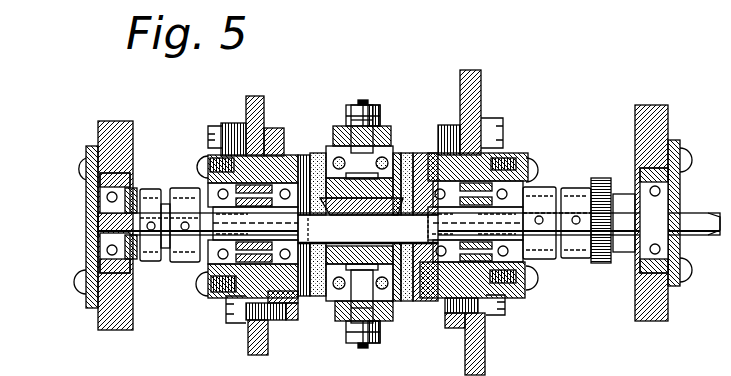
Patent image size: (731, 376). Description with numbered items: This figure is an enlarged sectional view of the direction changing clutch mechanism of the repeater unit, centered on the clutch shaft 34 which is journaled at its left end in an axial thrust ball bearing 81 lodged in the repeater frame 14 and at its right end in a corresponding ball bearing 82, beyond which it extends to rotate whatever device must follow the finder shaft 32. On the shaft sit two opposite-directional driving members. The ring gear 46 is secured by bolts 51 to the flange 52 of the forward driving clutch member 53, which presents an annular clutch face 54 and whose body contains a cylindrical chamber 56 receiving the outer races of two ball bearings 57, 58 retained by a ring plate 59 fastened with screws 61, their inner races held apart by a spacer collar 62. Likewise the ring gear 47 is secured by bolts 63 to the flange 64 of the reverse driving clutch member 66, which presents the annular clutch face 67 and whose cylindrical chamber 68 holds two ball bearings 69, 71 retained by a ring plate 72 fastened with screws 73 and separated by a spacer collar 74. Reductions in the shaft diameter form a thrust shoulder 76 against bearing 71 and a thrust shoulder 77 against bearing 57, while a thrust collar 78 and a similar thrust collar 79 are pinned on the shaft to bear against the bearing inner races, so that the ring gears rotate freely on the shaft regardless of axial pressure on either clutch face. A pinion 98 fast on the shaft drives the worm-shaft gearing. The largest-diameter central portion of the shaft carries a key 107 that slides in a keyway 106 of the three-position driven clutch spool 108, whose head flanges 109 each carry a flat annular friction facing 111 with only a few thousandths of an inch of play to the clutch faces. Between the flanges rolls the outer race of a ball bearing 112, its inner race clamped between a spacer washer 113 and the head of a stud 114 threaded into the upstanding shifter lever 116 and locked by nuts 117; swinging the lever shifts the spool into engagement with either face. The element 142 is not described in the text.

The repeater frame 14 is at (90, 314).
The finder shaft 32 is at (722, 323).
The clutch shaft 34 is at (92, 216).
The ring gear 46 is at (470, 80).
The ring gear 47 is at (250, 101).
The bolts 51 is at (488, 114).
The flange 52 is at (436, 120).
The forward driving clutch member 53 is at (496, 148).
The annular clutch face 54 is at (410, 157).
The cylindrical chamber 56 is at (496, 294).
The ball bearing 57 is at (436, 230).
The ball bearing 58 is at (524, 168).
The ring plate 59 is at (505, 152).
The screws 61 is at (514, 158).
The spacer collar 62 is at (476, 228).
The bolts 63 is at (208, 122).
The flange 64 is at (264, 122).
The reverse driving clutch member 66 is at (220, 141).
The annular clutch face 67 is at (296, 148).
The cylindrical chamber 68 is at (214, 296).
The ball bearing 69 is at (200, 270).
The ball bearing 71 is at (300, 270).
The ring plate 72 is at (228, 158).
The screws 73 is at (196, 160).
The spacer collar 74 is at (255, 223).
The thrust shoulder 76 is at (294, 216).
The thrust shoulder 77 is at (424, 203).
The thrust collar 78 is at (534, 252).
The thrust collar 79 is at (176, 256).
The ball bearing 81 is at (100, 194).
The ball bearing 82 is at (660, 198).
The pinion 98 is at (592, 256).
The keyway 106 is at (330, 154).
The key 107 is at (355, 196).
The driven clutch spool 108 is at (376, 200).
The head flanges 109 is at (322, 267).
The friction facing 111 is at (314, 260).
The ball bearing 112 is at (382, 142).
The spacer washer 113 is at (376, 120).
The stud 114 is at (354, 94).
The shifter lever 116 is at (346, 107).
The nuts 117 is at (370, 96).
The bracket 142 is at (722, 291).